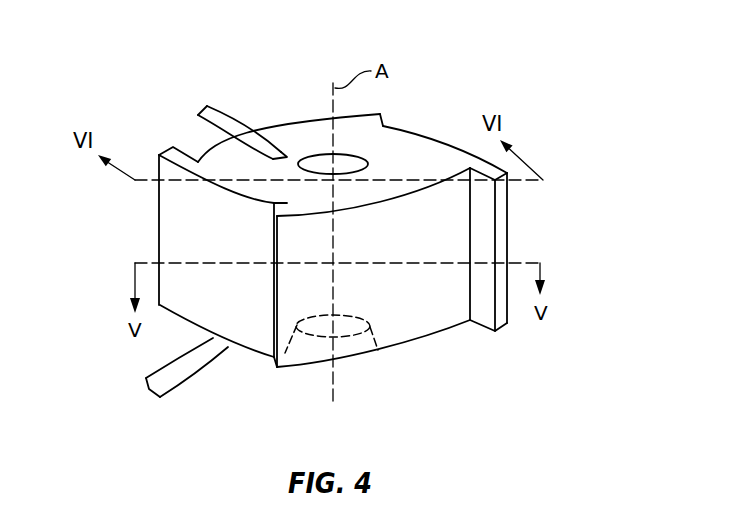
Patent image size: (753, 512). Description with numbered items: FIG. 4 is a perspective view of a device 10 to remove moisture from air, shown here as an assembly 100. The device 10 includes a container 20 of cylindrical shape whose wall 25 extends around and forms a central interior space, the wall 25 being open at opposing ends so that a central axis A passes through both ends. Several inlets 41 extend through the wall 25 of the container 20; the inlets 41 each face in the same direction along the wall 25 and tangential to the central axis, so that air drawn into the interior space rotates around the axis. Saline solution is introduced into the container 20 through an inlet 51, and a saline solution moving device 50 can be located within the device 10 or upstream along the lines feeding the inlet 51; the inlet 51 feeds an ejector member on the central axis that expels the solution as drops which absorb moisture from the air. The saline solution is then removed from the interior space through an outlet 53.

The device 10 is at (434, 50).
The segment 100 is at (160, 71).
The container 20 is at (449, 235).
The wall 25 is at (251, 303).
The inlets 41 is at (383, 123).
The saline solution moving device 50 is at (352, 337).
The inlets 51 is at (228, 110).
The outlets 53 is at (170, 378).